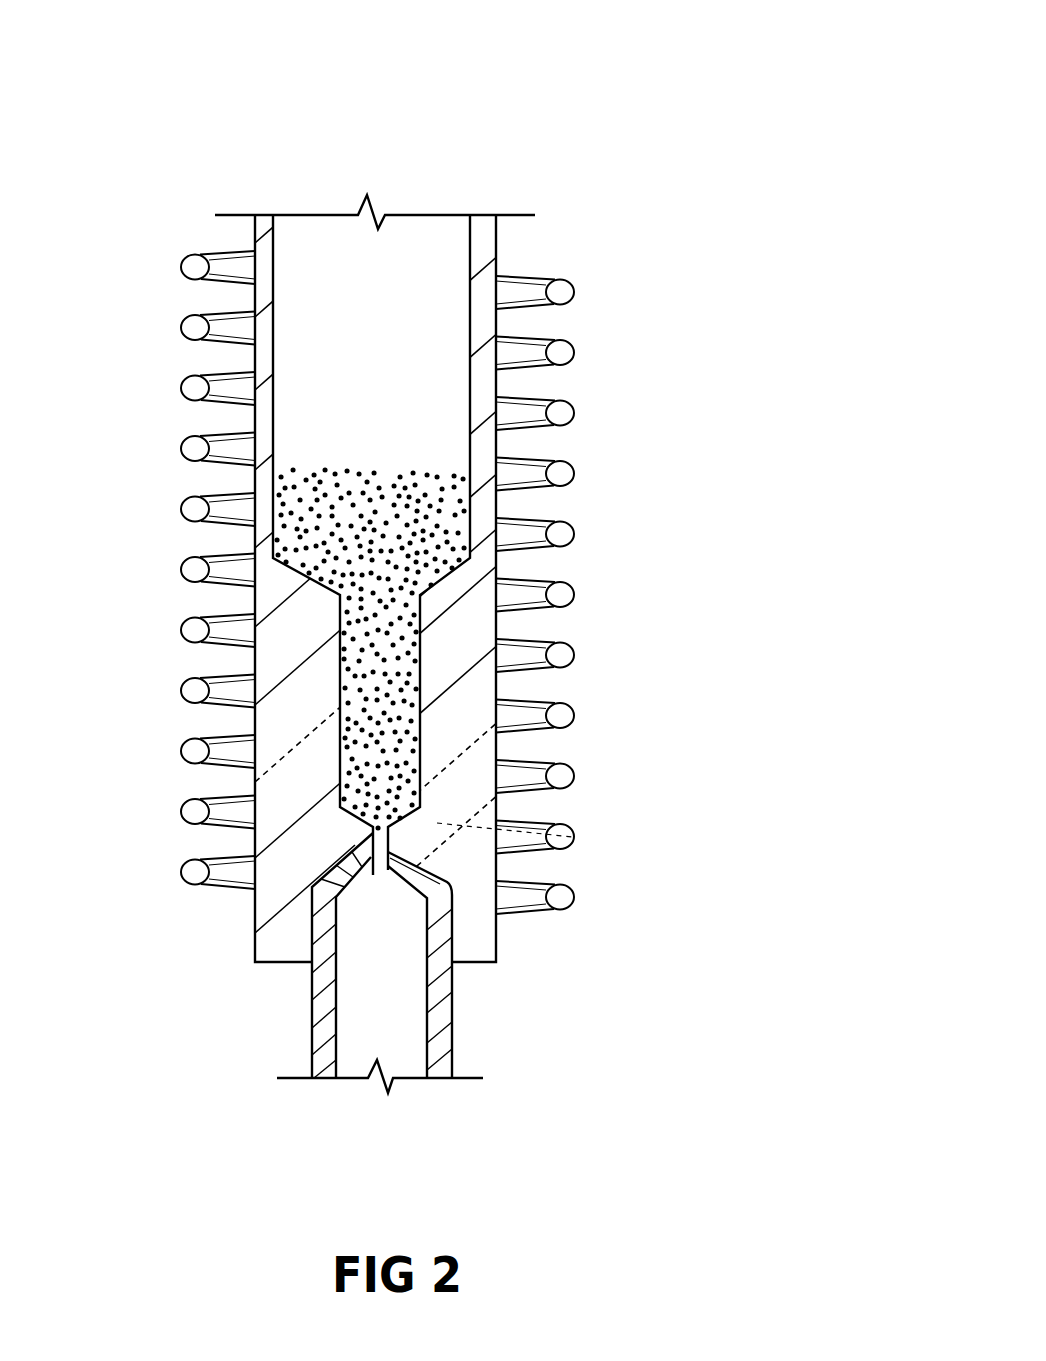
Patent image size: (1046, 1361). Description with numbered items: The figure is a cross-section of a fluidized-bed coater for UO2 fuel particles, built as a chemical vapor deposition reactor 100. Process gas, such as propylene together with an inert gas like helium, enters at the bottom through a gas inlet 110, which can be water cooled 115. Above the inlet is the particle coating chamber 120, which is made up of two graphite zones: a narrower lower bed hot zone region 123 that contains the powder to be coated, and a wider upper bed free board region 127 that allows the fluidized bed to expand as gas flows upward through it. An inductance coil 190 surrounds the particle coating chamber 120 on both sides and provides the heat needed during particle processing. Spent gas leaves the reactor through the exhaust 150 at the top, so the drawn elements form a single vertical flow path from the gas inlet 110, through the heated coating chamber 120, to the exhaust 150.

The chemical vapor deposition reactor 100 is at (176, 121).
The exhaust 150 is at (378, 195).
The inductance coil 190 is at (591, 347).
The upper bed region 127 is at (466, 516).
The lower bed hot zone region 123 is at (399, 635).
The particle coating chamber 120 is at (484, 755).
The water cooling 115 is at (464, 1017).
The gas inlet 110 is at (385, 1108).